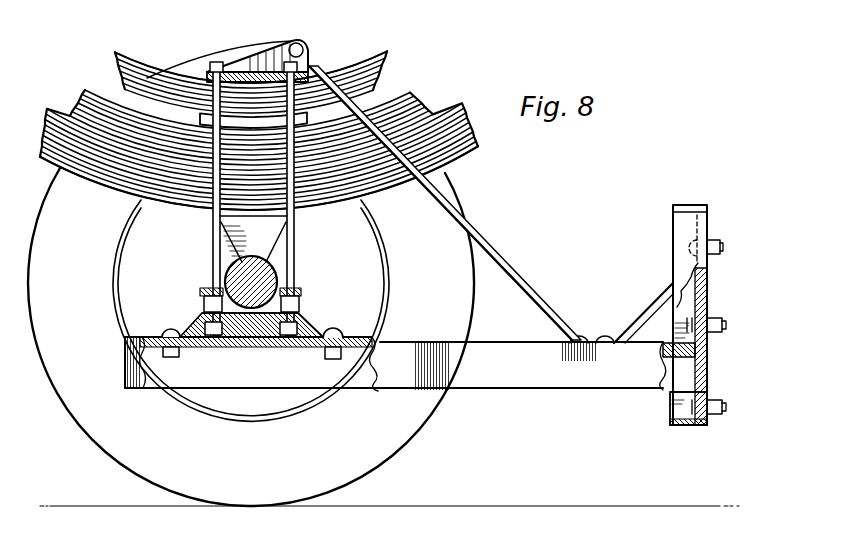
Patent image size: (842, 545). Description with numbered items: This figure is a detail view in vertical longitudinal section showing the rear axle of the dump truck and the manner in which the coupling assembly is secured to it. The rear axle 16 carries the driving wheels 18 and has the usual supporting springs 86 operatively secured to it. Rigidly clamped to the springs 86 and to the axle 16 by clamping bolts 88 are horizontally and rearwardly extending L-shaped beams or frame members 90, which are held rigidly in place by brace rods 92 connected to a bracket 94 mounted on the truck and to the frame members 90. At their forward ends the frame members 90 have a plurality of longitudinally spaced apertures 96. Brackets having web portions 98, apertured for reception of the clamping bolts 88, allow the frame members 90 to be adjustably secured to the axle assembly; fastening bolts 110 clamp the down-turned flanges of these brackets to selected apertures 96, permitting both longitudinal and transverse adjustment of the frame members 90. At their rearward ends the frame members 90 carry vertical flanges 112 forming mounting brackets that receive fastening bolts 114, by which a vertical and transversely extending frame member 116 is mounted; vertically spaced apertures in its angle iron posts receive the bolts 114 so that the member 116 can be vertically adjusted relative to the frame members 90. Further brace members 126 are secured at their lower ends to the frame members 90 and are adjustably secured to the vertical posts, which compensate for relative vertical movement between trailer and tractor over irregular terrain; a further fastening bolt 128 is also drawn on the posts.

The rear axle 16 is at (243, 277).
The driving wheels 18 is at (75, 385).
The supporting springs 86 is at (87, 137).
The clamping bolts 88 is at (212, 233).
The frame members 90 is at (510, 377).
The brace rods 92 is at (505, 267).
The bracket 94 is at (263, 53).
The apertures 96 is at (245, 348).
The web portions 98 is at (268, 340).
The fastening bolts 110 is at (168, 328).
The vertical flanges 112 is at (662, 357).
The fastening bolts 114 is at (708, 322).
The vertical frame member 116 is at (697, 203).
The brace members 126 is at (657, 303).
The bolt 128 is at (714, 242).